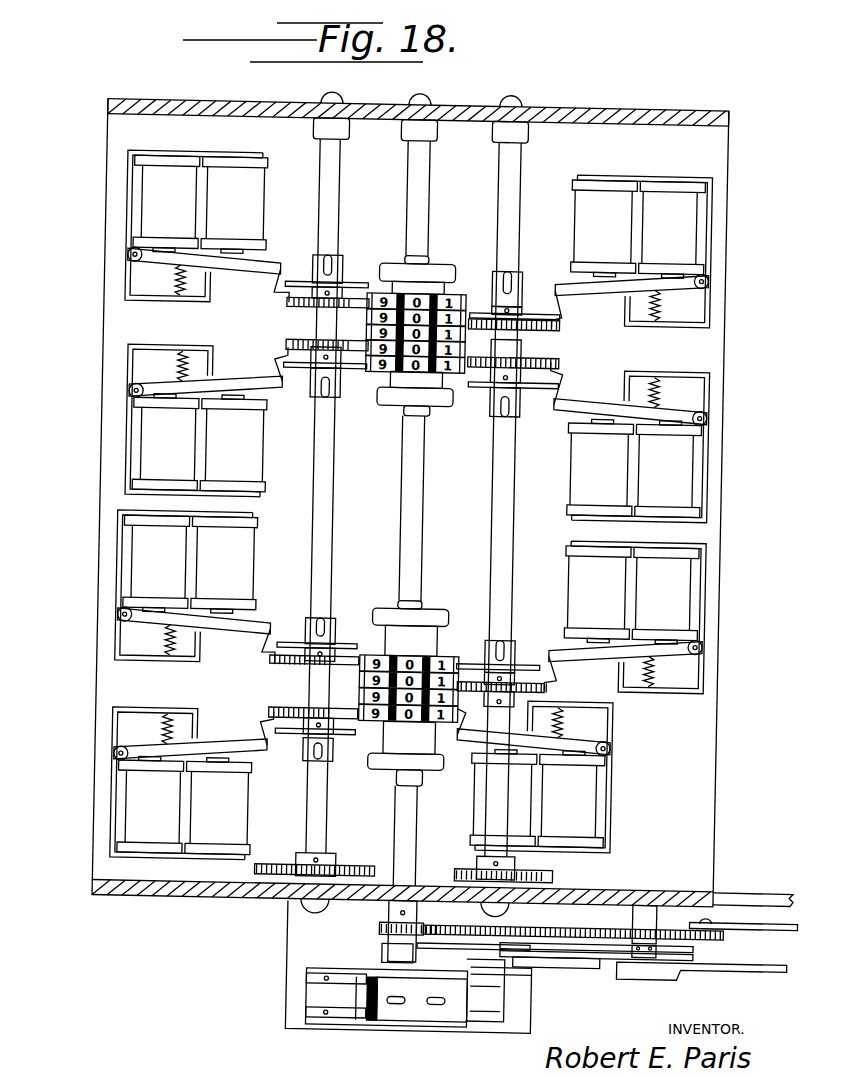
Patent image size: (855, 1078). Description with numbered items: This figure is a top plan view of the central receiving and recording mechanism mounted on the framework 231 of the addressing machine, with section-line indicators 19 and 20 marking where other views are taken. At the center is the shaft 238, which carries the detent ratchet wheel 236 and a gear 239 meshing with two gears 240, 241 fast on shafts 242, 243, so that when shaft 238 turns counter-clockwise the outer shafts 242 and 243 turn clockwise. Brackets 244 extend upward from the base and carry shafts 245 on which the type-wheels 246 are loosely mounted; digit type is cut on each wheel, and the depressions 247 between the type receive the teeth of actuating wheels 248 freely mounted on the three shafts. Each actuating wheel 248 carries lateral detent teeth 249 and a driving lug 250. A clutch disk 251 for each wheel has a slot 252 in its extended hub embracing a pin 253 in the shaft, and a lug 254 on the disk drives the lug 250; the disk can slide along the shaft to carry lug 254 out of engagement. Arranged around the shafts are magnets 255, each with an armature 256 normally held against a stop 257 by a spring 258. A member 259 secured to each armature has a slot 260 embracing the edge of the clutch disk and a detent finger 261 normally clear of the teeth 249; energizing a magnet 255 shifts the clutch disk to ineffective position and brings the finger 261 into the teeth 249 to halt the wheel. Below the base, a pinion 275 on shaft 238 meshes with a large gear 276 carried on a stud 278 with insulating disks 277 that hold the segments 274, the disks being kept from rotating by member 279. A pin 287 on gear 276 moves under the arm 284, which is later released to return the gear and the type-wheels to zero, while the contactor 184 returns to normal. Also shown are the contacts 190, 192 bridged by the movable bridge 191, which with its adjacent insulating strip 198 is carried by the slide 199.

The section line 19- 19 is at (30, 505).
The section line 20- 20 is at (31, 325).
The contactor 184 is at (652, 953).
The contact 190 is at (316, 1016).
The movable bridge 191 is at (373, 1024).
The contact 192 is at (322, 982).
The strip of insulating material 198 is at (383, 1023).
The slide 199 is at (435, 1010).
The framework 231 is at (777, 886).
The detent ratchet wheel 236 is at (369, 960).
The shaft 238 is at (424, 521).
The gear 239 is at (433, 880).
The gear 240 is at (352, 866).
The gear 241 is at (566, 874).
The shaft 242 is at (346, 809).
The shaft 243 is at (496, 798).
The bracket 244 is at (432, 281).
The shaft 245 is at (400, 261).
The type-wheel 246 is at (447, 302).
The depression 247 is at (461, 666).
The actuating wheel 248 is at (294, 666).
The detent teeth 249 is at (339, 716).
The driving lug 250 is at (305, 371).
The clutch disk 251 is at (341, 646).
The slot 252 is at (345, 631).
The pin 253 is at (320, 618).
The lug 254 is at (299, 361).
The magnet 255 is at (412, 509).
The armature 256 is at (263, 753).
The stop 257 is at (221, 745).
The spring 258 is at (653, 388).
The member 259 is at (587, 325).
The slot 260 is at (562, 349).
The detent finger 261 is at (264, 304).
The segment 274 is at (589, 954).
The pinion 275 is at (389, 930).
The gear 276 is at (610, 920).
The disk of insulating material 277 is at (461, 939).
The stud 278 is at (551, 962).
The member 279 is at (715, 966).
The arm 284 is at (777, 919).
The pin 287 is at (713, 910).